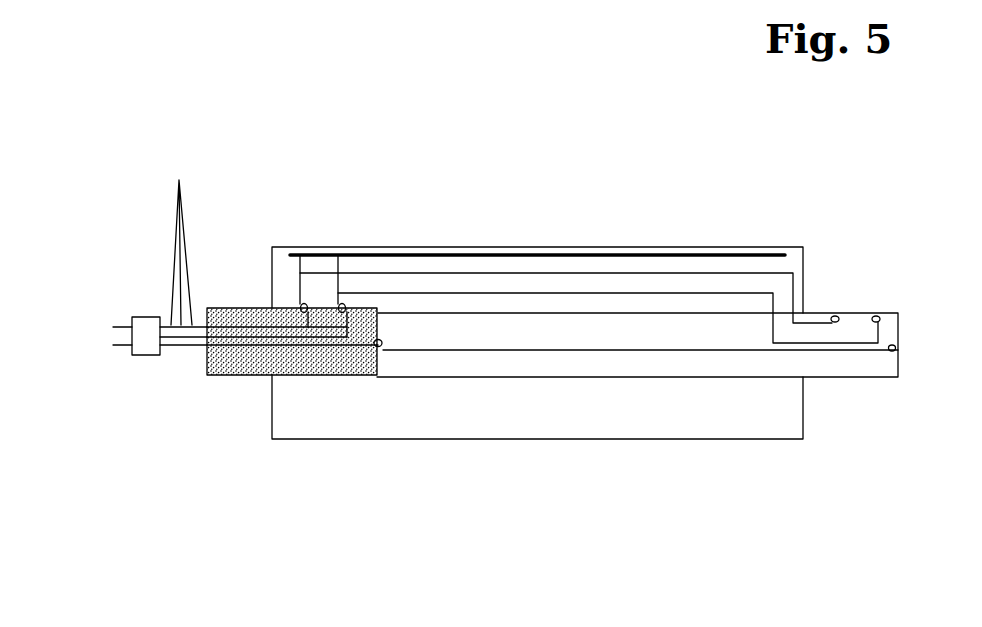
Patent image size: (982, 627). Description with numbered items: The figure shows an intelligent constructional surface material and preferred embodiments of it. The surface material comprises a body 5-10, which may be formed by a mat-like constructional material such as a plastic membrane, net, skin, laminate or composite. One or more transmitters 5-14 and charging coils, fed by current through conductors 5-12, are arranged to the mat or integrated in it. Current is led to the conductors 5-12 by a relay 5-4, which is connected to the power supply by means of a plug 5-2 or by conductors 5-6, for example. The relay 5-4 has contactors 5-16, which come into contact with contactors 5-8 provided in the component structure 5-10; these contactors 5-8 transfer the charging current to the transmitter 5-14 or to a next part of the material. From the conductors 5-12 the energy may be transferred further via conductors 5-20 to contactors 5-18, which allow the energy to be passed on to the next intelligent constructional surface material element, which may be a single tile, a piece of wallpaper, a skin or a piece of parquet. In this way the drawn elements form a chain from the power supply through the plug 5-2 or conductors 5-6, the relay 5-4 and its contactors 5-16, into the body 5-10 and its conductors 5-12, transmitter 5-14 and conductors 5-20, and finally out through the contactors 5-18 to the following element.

The plug 2 is at (122, 373).
The relay 4 is at (230, 373).
The conductors 6 is at (192, 216).
The contactors 8 is at (382, 340).
The body 10 is at (568, 332).
The conductors 12 is at (341, 303).
The transmitter 14 is at (625, 260).
The contactors 16 is at (378, 355).
The contactors 18 is at (896, 346).
The conductors 20 is at (542, 350).